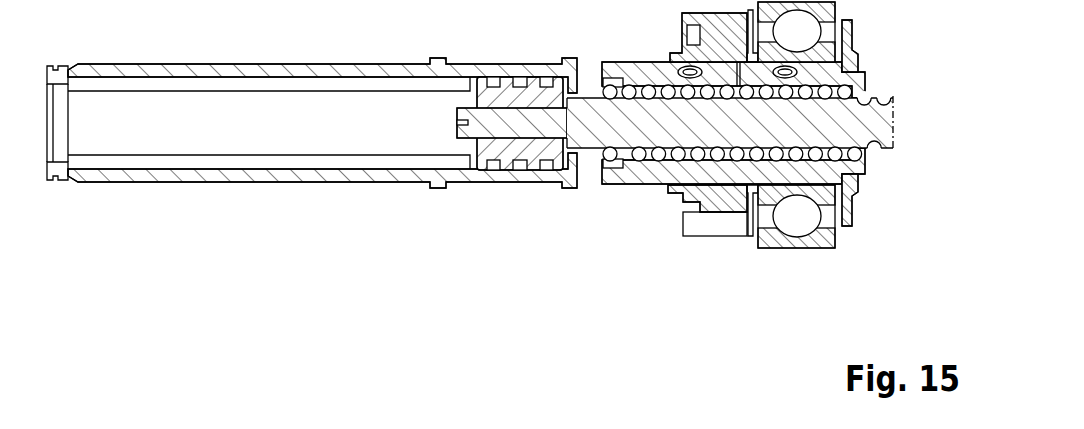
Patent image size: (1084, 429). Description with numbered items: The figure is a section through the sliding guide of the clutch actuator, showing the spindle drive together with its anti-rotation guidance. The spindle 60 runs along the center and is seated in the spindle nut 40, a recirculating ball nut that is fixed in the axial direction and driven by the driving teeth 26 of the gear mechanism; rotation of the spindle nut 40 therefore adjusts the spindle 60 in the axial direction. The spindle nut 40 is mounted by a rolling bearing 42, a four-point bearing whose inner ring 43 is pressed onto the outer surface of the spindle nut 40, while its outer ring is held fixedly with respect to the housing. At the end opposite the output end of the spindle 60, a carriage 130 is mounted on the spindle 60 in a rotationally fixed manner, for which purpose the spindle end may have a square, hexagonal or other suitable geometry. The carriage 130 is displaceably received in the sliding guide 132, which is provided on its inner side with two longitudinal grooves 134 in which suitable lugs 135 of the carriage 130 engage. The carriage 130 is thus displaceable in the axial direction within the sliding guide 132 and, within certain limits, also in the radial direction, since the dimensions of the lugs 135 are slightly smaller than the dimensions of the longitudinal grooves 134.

The driving teeth 26 is at (713, 227).
The spindle nut 40 is at (642, 178).
The rolling bearing 42 is at (802, 230).
The inner ring 43 is at (822, 202).
The spindle 60 is at (895, 128).
The carriage 130 is at (518, 98).
The sliding guide 132 is at (68, 138).
The longitudinal grooves 134 is at (223, 162).
The lugs 135 is at (532, 168).